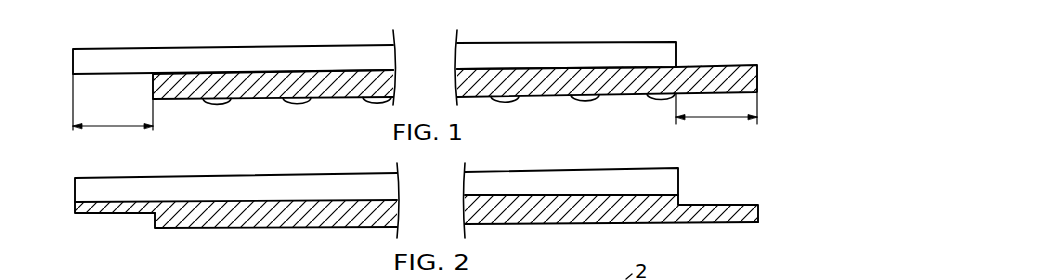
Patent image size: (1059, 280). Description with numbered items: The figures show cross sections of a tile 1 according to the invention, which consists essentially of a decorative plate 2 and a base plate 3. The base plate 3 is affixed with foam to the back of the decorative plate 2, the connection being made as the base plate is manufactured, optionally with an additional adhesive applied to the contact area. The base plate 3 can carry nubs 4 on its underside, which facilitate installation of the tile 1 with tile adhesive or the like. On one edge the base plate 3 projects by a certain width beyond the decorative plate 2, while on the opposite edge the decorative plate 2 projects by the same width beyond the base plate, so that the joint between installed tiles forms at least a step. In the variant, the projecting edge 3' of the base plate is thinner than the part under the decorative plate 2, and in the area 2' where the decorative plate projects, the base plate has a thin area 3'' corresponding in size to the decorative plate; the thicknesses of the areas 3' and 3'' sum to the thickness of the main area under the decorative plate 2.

In FIG. 1, the tile 1 is at (701, 39).
In FIG. 1, the decorative plate 2 is at (374, 37).
In FIG. 2, the decorative plate 2 is at (571, 162).
In FIG. 2, the area in which the decorative plate projects beyond the base plate 2' is at (236, 168).
In FIG. 1, the base plate 3 is at (491, 80).
In FIG. 2, the base plate 3 is at (456, 231).
In FIG. 2, the projecting edge of the base plate 3' is at (759, 208).
In FIG. 2, the thin area of the base plate 3'' is at (99, 232).
In FIG. 1, the nubs 4 is at (293, 102).